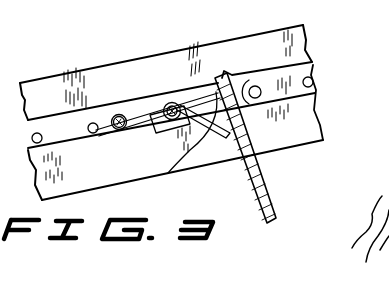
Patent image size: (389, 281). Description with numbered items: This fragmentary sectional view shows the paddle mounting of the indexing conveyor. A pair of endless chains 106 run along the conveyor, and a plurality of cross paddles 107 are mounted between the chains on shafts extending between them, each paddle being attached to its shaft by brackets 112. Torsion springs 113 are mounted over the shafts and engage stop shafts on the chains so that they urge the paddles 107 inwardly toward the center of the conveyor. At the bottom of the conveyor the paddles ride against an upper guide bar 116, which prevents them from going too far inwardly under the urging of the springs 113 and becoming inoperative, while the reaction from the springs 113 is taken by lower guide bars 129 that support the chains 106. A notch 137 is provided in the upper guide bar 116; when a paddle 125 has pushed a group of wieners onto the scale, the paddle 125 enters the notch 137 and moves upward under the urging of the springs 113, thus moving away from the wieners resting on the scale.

The endless chains 106 is at (65, 121).
The upper guide bar 116 is at (137, 72).
The brackets 112 is at (179, 87).
The notch 137 is at (207, 84).
The cross paddles 107 is at (266, 131).
The paddle 125 is at (258, 172).
The torsion springs 113 is at (168, 172).
The lower guide bars 129 is at (91, 180).